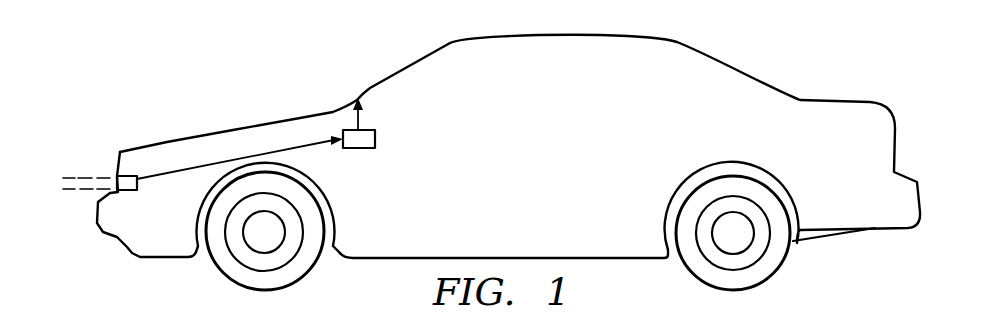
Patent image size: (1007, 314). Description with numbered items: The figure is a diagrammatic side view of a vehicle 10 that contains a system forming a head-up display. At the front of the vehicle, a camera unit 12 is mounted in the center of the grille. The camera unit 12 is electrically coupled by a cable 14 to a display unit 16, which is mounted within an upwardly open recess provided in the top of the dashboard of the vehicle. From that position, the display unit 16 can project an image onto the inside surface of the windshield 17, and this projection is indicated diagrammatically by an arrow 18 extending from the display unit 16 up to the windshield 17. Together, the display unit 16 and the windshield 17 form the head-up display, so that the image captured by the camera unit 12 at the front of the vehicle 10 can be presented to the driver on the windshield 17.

The vehicle 10 is at (806, 52).
The camera unit 12 is at (127, 193).
The cable 14 is at (167, 178).
The display unit 16 is at (358, 150).
The windshield 17 is at (392, 73).
The arrow 18 is at (358, 120).